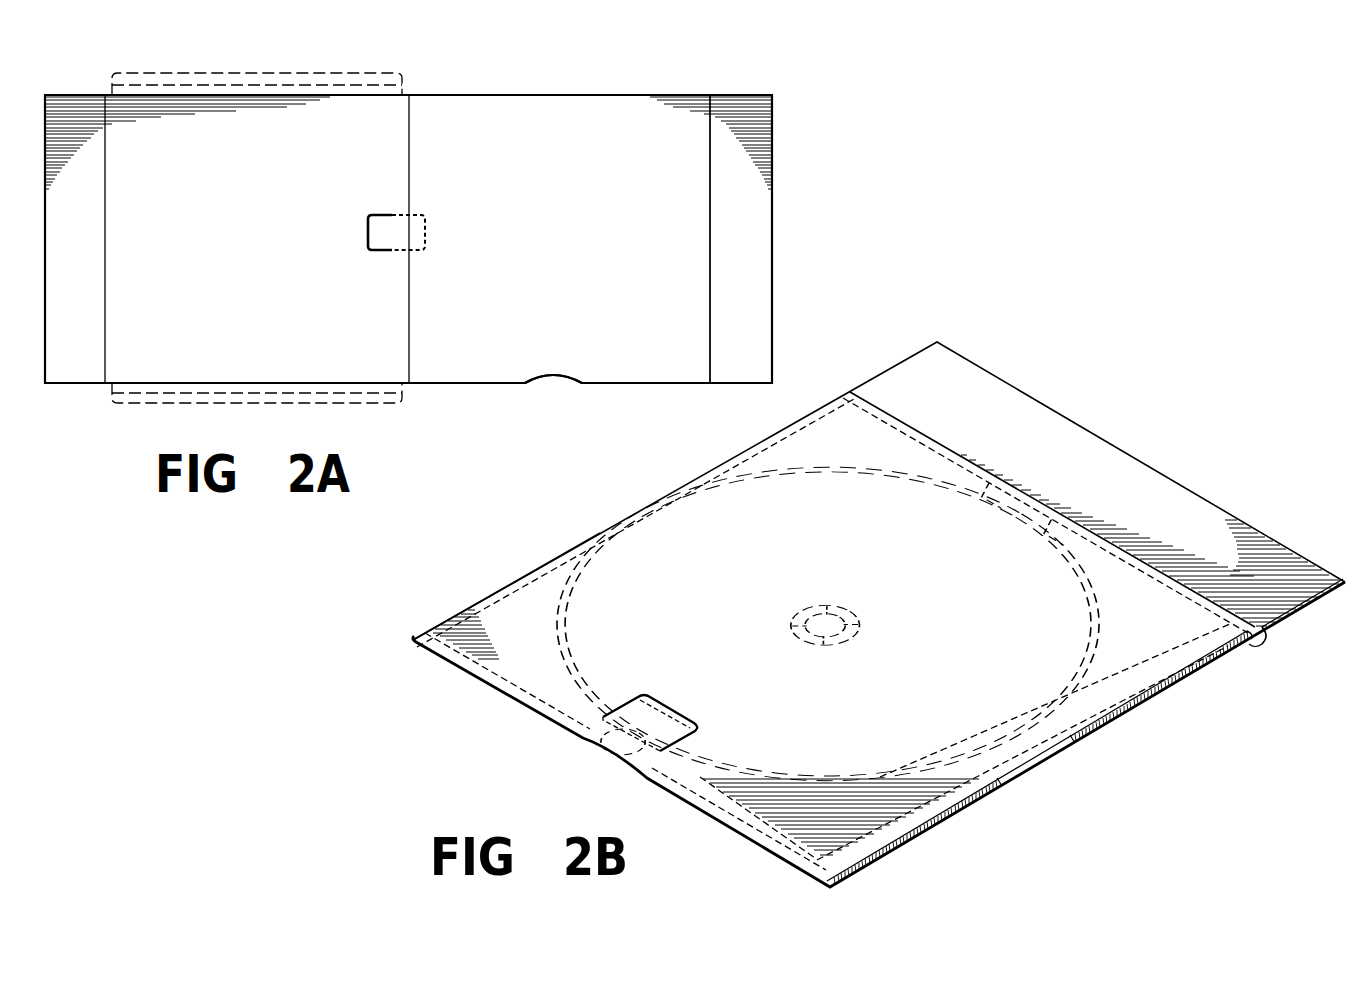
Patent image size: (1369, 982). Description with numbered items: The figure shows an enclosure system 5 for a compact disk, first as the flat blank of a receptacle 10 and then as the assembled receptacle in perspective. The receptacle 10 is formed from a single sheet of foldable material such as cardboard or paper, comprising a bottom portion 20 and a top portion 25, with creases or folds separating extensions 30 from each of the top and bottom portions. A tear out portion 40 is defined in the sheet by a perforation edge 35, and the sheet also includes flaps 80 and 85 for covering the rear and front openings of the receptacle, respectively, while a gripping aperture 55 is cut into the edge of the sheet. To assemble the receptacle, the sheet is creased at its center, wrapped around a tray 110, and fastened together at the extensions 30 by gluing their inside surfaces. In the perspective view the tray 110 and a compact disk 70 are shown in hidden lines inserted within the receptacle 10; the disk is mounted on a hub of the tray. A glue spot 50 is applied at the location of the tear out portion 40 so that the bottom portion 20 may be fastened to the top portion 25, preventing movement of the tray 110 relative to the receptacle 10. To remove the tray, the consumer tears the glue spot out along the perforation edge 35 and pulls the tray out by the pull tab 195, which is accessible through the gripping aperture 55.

In FIG. 2B, the enclosure system 5 is at (879, 585).
In FIG. 2A, the receptacle 10 is at (791, 92).
In FIG. 2B, the receptacle 10 is at (1052, 402).
In FIG. 2A, the bottom portion 20 is at (578, 247).
In FIG. 2A, the top portion 25 is at (257, 247).
In FIG. 2B, the top portion 25 is at (516, 578).
In FIG. 2A, the extensions 30 is at (86, 247).
In FIG. 2B, the extensions 30 is at (1130, 468).
In FIG. 2A, the perforation edge 35 is at (423, 215).
In FIG. 2A, the tear out portion 40 is at (385, 222).
In FIG. 2B, the tear out portion 40 is at (640, 704).
In FIG. 2B, the glue spot 50 is at (657, 706).
In FIG. 2A, the gripping aperture 55 is at (558, 385).
In FIG. 2B, the gripping aperture 55 is at (1005, 784).
In FIG. 2B, the compact disk 70 is at (828, 623).
In FIG. 2A, the flap 80 is at (400, 79).
In FIG. 2A, the flap 85 is at (400, 403).
In FIG. 2B, the tray 110 is at (1026, 514).
In FIG. 2B, the pull tab 195 is at (1060, 754).